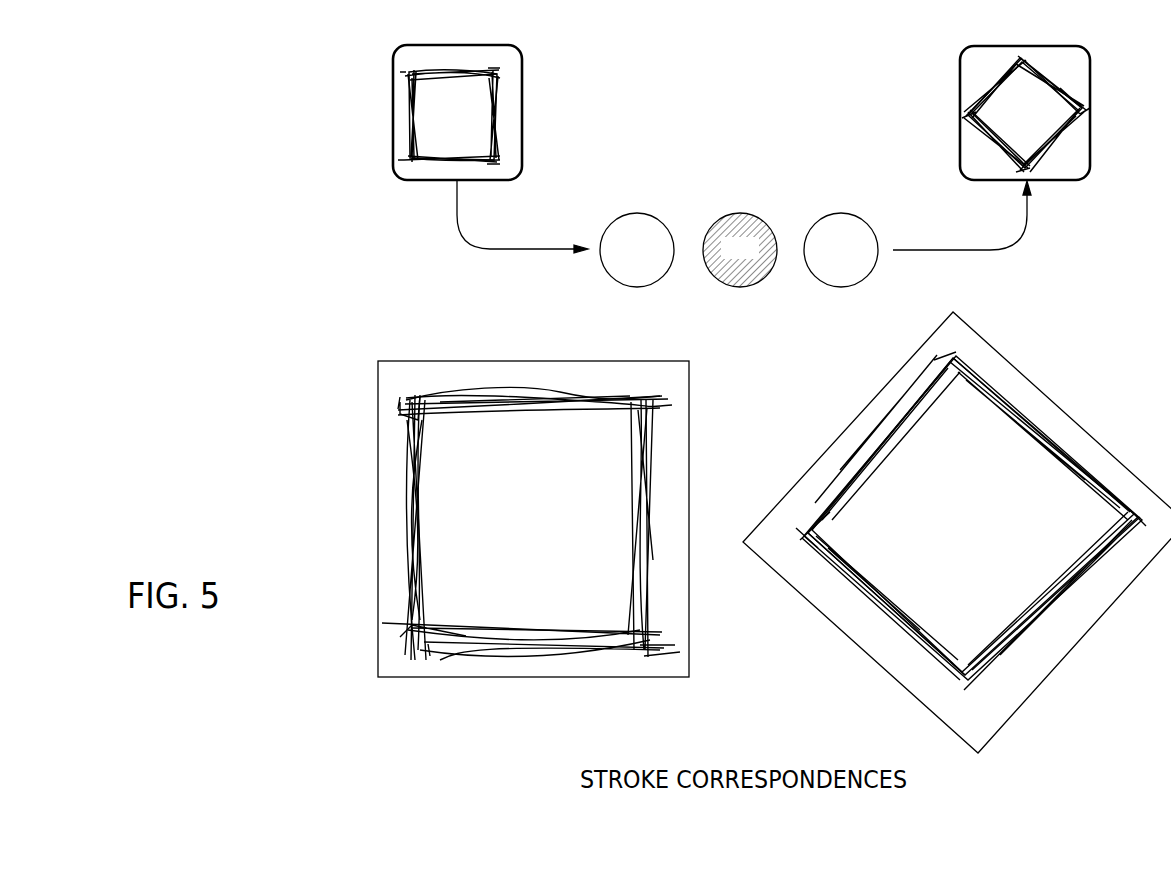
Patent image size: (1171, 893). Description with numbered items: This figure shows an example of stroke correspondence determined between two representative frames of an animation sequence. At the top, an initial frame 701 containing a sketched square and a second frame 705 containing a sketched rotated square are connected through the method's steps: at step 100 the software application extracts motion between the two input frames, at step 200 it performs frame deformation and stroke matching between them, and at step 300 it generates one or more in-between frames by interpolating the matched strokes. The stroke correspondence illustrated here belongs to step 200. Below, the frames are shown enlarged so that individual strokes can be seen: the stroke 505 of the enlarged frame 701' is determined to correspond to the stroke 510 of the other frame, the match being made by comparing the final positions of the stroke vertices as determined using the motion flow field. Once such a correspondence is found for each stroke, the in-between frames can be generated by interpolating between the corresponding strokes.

The frame 701 is at (463, 97).
The frame 705 is at (1030, 47).
The frame 701' is at (533, 494).
The stroke 505 is at (405, 455).
The stroke 510 is at (885, 420).
The step 100 is at (637, 250).
The step 200 is at (740, 250).
The step 300 is at (841, 250).